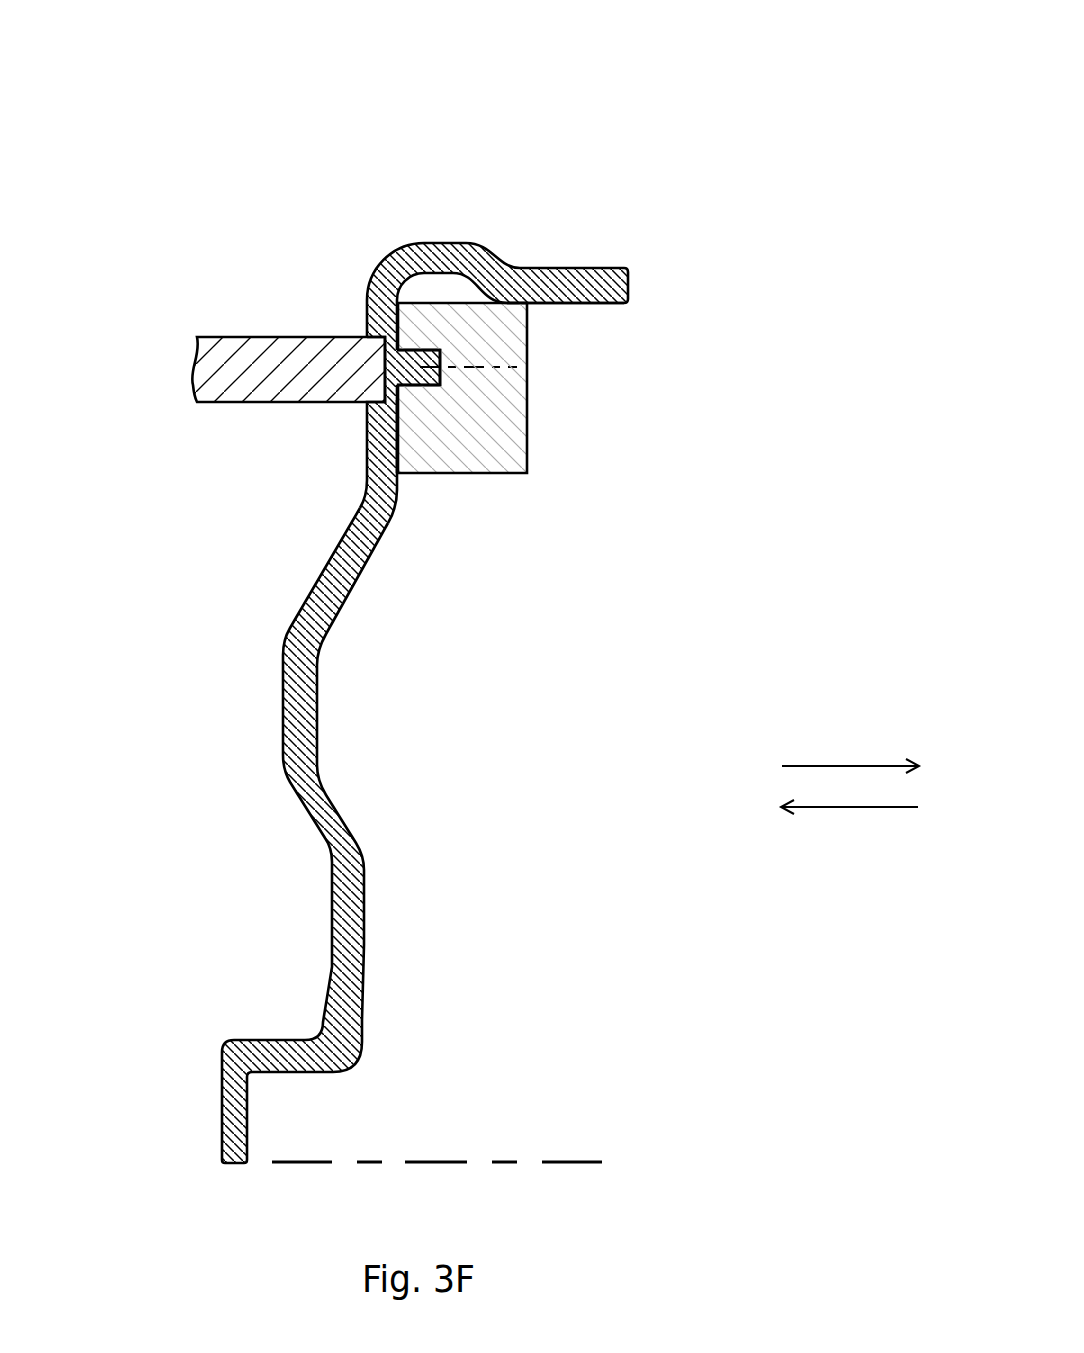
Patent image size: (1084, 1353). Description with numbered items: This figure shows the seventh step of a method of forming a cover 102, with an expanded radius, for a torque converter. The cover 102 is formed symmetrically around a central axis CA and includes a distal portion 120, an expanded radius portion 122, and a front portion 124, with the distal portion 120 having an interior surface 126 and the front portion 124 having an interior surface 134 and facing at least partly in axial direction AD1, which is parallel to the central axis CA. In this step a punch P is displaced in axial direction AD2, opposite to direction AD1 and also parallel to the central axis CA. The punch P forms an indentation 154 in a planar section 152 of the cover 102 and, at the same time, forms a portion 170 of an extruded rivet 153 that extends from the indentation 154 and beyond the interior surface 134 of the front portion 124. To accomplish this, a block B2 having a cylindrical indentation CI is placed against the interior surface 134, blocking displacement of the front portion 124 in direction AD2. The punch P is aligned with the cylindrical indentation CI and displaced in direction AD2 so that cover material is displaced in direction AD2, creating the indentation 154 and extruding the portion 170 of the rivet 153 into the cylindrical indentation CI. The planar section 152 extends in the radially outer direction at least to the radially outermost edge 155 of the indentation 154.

The cover 102 is at (330, 99).
The distal portion 120 is at (602, 267).
The expanded radius portion 122 is at (397, 342).
The front portion 124 is at (282, 703).
The interior surface 126 is at (574, 303).
The interior surface 134 is at (398, 427).
The planar section 152 is at (368, 447).
The extruded rivet 153 is at (440, 272).
The extruded rivet indentation 154 is at (430, 348).
The radially outermost edge 155 is at (369, 300).
The portion of extruded rivet 170 is at (440, 377).
The punch P is at (220, 335).
The block B2 is at (527, 463).
The cylindrical indentation CI is at (418, 390).
The central axis CA is at (560, 1163).
The axial direction AD1 is at (848, 807).
The axial direction AD2 is at (825, 766).